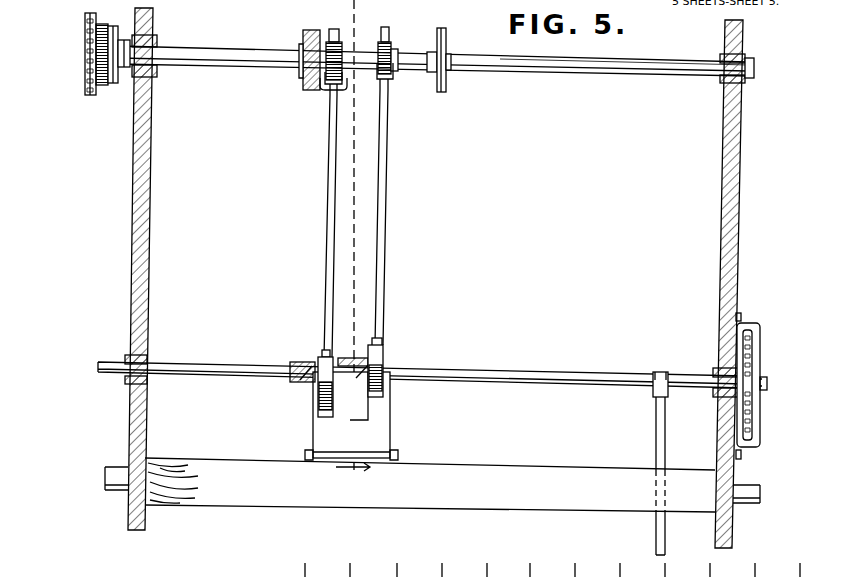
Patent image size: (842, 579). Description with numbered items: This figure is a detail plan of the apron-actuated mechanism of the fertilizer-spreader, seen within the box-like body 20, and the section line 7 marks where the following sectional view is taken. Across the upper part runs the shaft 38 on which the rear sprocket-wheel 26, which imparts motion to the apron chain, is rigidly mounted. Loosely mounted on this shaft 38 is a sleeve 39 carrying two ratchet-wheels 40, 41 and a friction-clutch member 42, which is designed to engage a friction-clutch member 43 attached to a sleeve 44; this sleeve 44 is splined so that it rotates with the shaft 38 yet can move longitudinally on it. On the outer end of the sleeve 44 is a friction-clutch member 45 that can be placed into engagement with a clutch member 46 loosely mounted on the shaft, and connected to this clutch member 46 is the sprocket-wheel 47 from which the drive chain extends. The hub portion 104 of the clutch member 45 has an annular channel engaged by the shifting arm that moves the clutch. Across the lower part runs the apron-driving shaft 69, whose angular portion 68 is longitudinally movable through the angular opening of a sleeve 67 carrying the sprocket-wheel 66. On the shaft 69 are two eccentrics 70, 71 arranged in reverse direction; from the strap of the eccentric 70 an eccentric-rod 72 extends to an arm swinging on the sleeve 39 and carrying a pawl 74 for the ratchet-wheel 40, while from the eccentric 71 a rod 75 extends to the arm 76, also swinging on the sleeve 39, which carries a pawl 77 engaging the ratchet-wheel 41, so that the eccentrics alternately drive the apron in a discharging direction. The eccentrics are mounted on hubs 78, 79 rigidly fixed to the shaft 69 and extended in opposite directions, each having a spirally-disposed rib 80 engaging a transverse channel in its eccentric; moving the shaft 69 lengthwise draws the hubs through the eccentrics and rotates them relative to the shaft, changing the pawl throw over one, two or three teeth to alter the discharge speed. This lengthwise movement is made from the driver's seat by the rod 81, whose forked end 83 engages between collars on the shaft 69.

The section line 7 is at (353, 250).
The box-like body 20 is at (528, 571).
The sprocket-wheel 26 is at (447, 88).
The shaft 38 is at (676, 72).
The sleeve 39 is at (376, 78).
The ratchet-wheel 40 is at (388, 35).
The ratchet-wheel 41 is at (333, 29).
The friction-clutch member 42 is at (308, 31).
The friction-clutch member 43 is at (303, 86).
The sleeve 44 is at (237, 47).
The friction-clutch member 45 is at (114, 26).
The clutch member 46 is at (102, 24).
The sprocket-wheel 47 is at (85, 48).
The sprocket-wheel 66 is at (758, 433).
The sleeve 67 is at (713, 392).
The angular portion 68 is at (696, 374).
The apron-driving shaft 69 is at (572, 372).
The eccentric 70 is at (386, 352).
The eccentric 71 is at (320, 360).
The eccentric-rod 72 is at (388, 241).
The pawl 74 is at (396, 61).
The rod 75 is at (325, 282).
The arm 76 is at (322, 90).
The pawl 77 is at (332, 96).
The hub 78 is at (380, 340).
The hub 79 is at (291, 377).
The spirally-disposed rib 80 is at (311, 372).
The rod 81 is at (656, 433).
The forked end 83 is at (660, 371).
The hub portion 104 is at (127, 70).